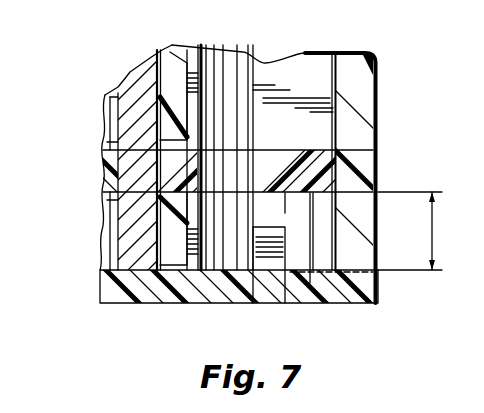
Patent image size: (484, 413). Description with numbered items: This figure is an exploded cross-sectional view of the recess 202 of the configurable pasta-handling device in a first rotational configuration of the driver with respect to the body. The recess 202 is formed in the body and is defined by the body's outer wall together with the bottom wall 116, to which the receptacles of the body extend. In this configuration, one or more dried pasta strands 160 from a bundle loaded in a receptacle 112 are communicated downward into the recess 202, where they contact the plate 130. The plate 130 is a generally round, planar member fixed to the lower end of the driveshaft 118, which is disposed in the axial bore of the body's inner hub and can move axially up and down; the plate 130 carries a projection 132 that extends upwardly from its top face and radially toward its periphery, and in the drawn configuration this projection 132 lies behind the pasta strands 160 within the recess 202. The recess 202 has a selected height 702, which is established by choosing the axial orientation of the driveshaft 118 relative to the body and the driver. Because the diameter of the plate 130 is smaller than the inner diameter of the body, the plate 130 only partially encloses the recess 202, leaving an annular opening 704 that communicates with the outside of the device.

The receptacle 112 is at (312, 77).
The bottom wall 116 is at (312, 155).
The driveshaft 118 is at (105, 95).
The plate 130 is at (127, 306).
The projection 132 is at (268, 263).
The dried pasta strands 160 is at (258, 65).
The recess 202 is at (318, 238).
The selected height 702 is at (435, 233).
The annular opening 704 is at (302, 285).